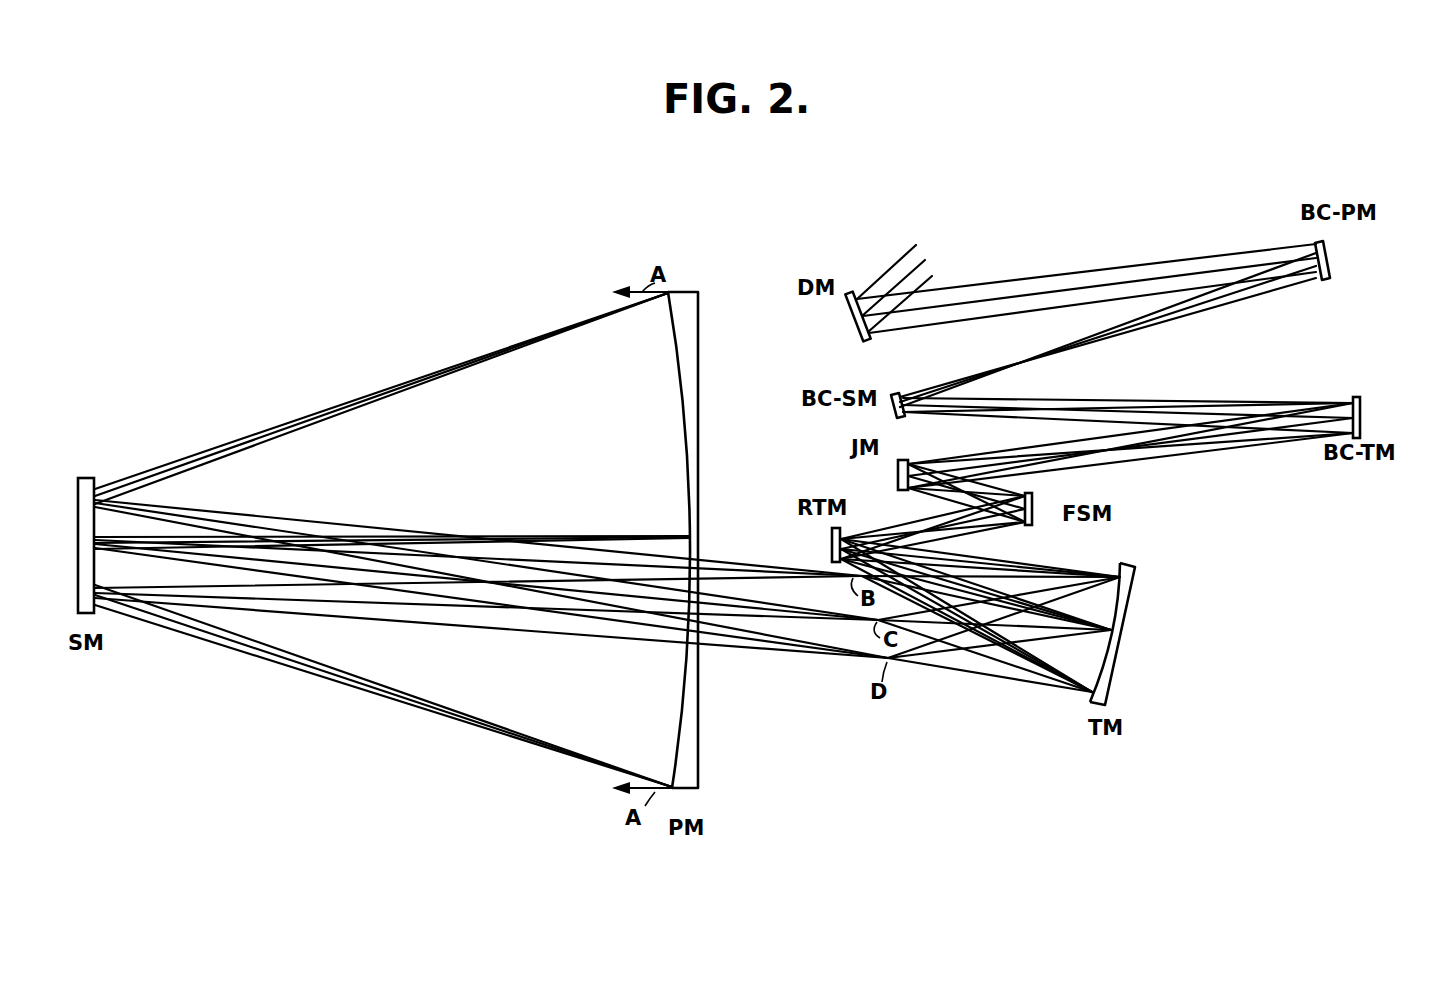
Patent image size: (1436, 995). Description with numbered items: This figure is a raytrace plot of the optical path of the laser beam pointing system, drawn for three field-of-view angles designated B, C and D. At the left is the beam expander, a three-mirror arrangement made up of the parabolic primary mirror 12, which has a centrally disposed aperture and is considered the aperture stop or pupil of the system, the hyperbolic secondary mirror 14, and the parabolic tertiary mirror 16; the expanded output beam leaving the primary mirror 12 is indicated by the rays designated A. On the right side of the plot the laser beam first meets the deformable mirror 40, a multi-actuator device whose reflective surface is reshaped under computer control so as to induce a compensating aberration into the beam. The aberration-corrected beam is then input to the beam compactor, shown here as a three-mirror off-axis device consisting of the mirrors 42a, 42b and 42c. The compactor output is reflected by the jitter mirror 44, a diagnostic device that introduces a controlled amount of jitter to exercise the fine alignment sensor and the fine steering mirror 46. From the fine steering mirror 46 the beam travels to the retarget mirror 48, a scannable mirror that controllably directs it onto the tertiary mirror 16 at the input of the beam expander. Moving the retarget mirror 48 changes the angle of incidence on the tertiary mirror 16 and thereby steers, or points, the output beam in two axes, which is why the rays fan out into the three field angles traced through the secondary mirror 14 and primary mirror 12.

The parabolic primary mirror 12 is at (699, 705).
The hyperbolic secondary mirror 14 is at (88, 479).
The parabolic tertiary mirror 16 is at (1115, 660).
The deformable mirror 40 is at (852, 325).
The beam compactor primary mirror 42a is at (1330, 258).
The beam compactor secondary mirror 42b is at (897, 392).
The beam compactor tertiary mirror 42c is at (1362, 410).
The jitter mirror 44 is at (898, 480).
The fine steering mirror 46 is at (1034, 510).
The retarget mirror 48 is at (831, 550).